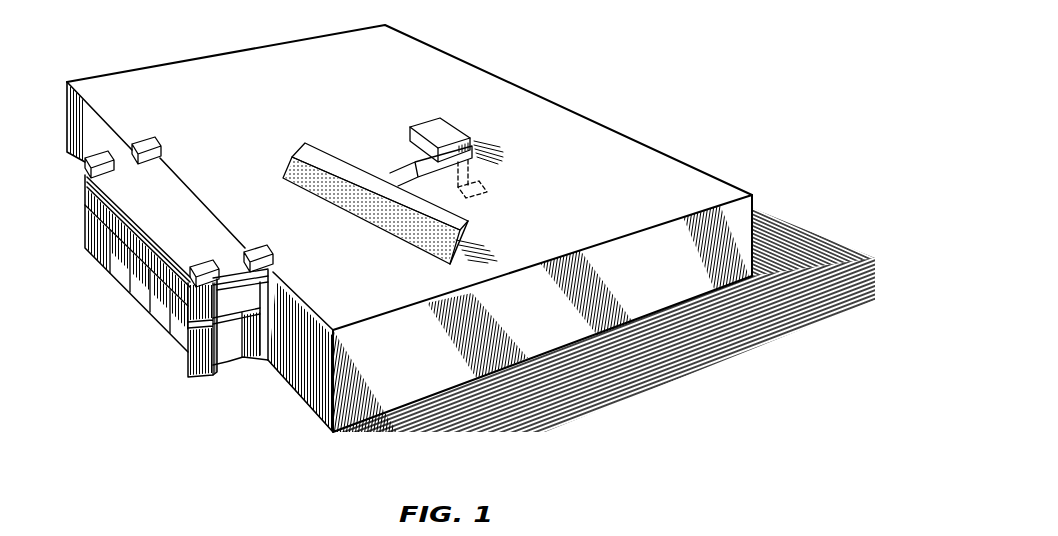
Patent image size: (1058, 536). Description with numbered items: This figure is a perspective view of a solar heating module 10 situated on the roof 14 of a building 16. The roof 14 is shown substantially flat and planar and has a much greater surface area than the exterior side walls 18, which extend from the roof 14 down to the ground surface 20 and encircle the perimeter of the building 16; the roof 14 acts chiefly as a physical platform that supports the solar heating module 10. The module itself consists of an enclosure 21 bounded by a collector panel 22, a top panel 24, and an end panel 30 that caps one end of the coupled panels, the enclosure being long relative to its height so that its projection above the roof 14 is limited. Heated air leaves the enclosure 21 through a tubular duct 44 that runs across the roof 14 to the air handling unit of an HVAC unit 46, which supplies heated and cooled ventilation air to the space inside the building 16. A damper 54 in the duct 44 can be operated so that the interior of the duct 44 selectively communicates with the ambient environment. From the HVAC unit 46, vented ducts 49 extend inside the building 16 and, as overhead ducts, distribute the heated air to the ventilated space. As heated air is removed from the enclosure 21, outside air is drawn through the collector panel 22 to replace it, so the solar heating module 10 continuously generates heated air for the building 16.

The solar heating module 10 is at (410, 173).
The roof 14 is at (627, 201).
The building 16 is at (471, 243).
The exterior side walls 18 is at (422, 368).
The ground surface 20 is at (382, 476).
The enclosure 21 is at (360, 165).
The collector panel 22 is at (384, 221).
The top panel 24 is at (398, 192).
The end panel 30 is at (466, 232).
The tubular duct 44 is at (450, 123).
The HVAC unit 46 is at (440, 118).
The vented ducts 49 is at (488, 181).
The damper 54 is at (467, 138).